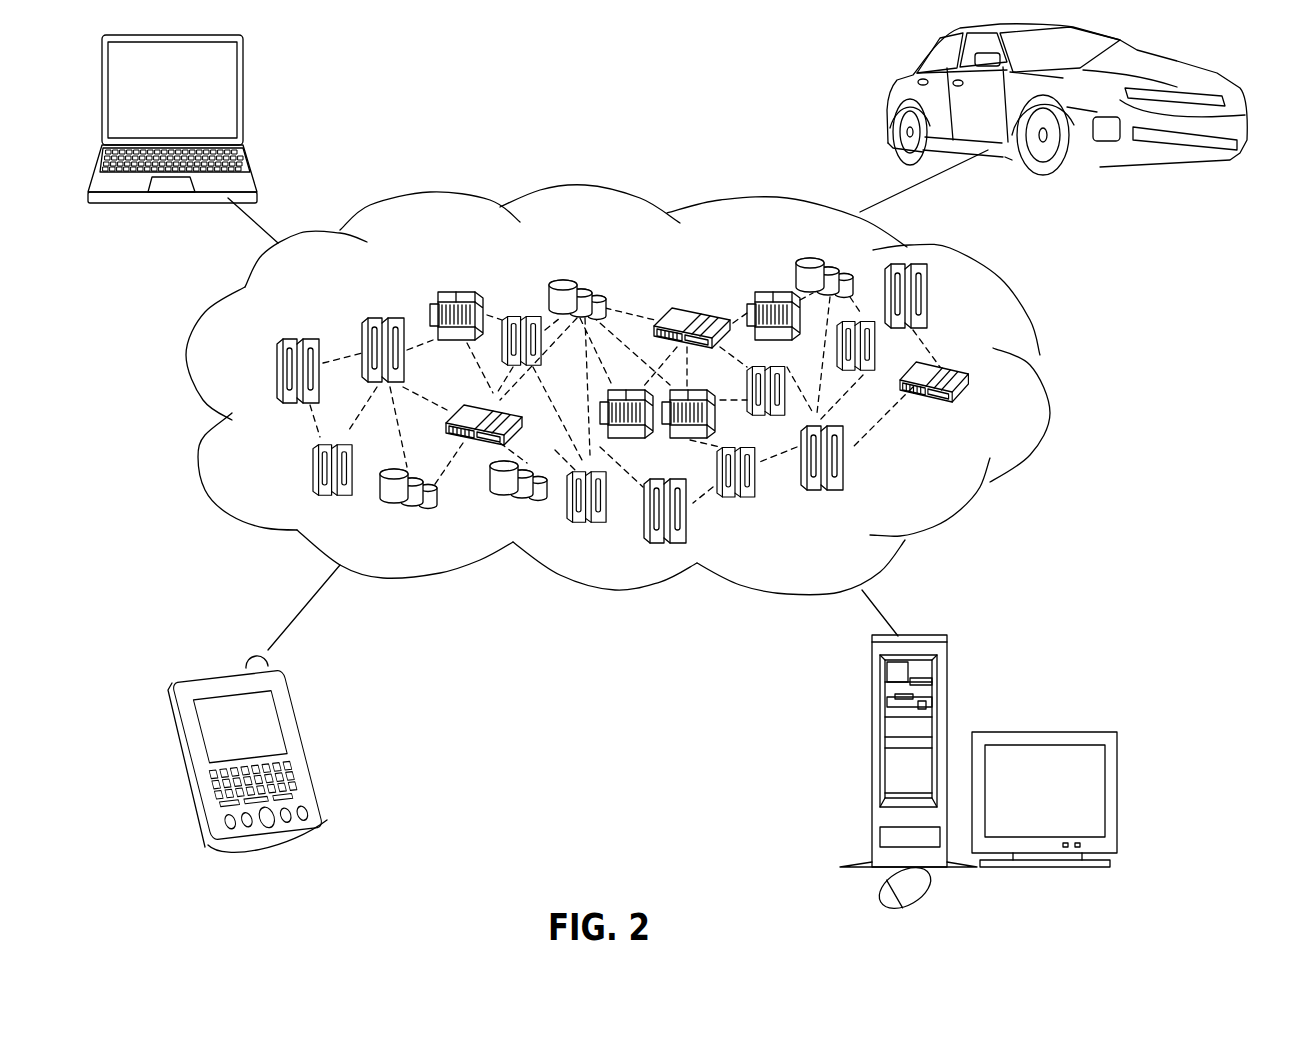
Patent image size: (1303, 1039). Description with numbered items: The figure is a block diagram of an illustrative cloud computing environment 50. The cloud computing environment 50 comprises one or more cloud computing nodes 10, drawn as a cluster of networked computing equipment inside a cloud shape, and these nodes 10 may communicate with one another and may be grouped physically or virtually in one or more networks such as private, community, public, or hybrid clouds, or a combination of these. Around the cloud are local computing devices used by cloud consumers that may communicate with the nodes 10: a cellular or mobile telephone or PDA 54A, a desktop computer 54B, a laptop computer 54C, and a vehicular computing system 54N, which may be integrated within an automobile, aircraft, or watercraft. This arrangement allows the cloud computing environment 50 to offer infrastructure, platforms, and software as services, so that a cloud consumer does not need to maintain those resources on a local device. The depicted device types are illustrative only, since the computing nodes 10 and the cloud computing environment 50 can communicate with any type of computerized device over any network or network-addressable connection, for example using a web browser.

The cloud computing nodes 10 is at (955, 488).
The cloud computing environment 50 is at (1043, 381).
The cellular telephone or PDA 54A is at (297, 712).
The desktop computer 54B is at (870, 697).
The laptop computer 54C is at (245, 73).
The vehicular computing system 54N is at (883, 90).